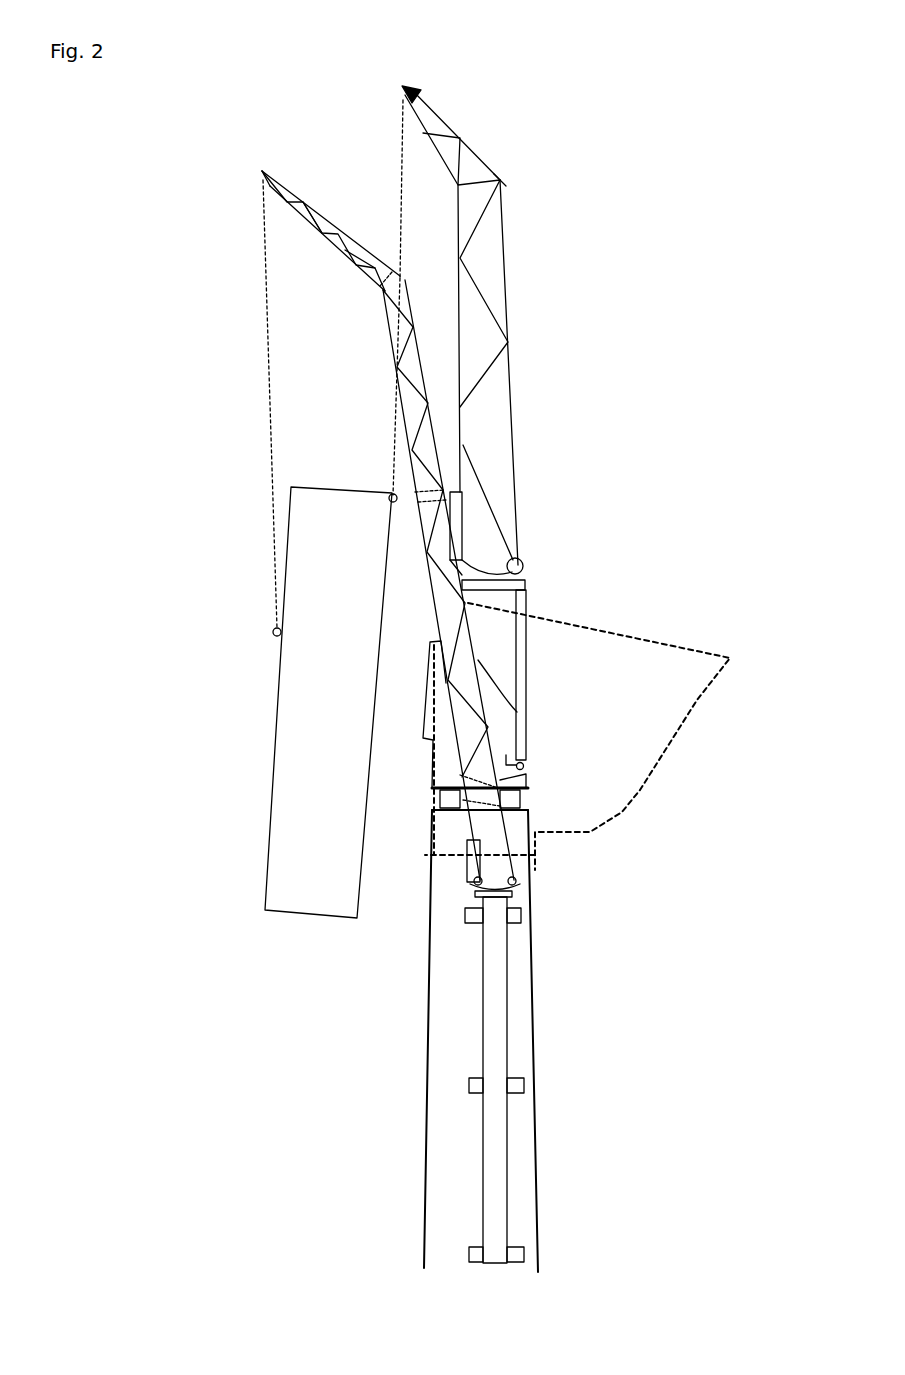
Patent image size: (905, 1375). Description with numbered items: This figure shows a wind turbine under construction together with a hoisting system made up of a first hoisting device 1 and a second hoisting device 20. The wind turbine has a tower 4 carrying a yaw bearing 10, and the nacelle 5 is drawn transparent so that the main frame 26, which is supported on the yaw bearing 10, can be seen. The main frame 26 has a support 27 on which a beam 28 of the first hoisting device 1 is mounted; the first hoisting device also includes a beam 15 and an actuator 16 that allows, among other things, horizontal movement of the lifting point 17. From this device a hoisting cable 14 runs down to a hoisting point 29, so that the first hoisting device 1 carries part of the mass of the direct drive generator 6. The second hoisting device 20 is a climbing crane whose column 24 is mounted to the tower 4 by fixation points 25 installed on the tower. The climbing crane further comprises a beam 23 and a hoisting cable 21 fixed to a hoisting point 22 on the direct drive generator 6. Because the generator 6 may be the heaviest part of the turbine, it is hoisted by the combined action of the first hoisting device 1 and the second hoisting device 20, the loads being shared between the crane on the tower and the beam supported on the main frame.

The first hoisting device 1 is at (476, 136).
The tower 4 is at (426, 1100).
The nacelle 5 is at (700, 700).
The direct drive generator 6 is at (320, 905).
The yaw bearing 10 is at (517, 800).
The hoisting cable 14 is at (402, 224).
The beam 15 is at (503, 180).
The actuator 16 is at (463, 508).
The lifting point 17 is at (409, 85).
The second hoisting device 20 is at (338, 198).
The hoisting cable 21 is at (267, 465).
The hoisting point 22 is at (274, 630).
The beam 23 is at (392, 318).
The column 24 is at (497, 1025).
The fixation points 25 is at (520, 915).
The main frame 26 is at (527, 780).
The support 27 is at (528, 767).
The beam 28 is at (528, 684).
The hoisting point 29 is at (394, 505).